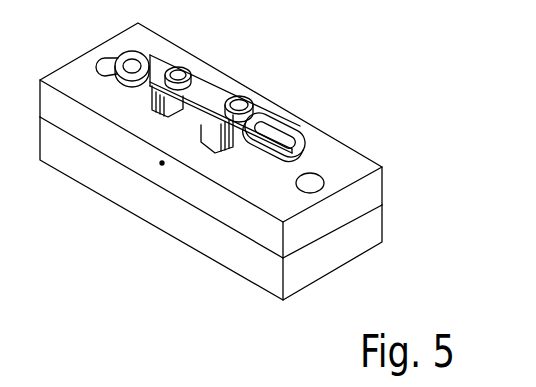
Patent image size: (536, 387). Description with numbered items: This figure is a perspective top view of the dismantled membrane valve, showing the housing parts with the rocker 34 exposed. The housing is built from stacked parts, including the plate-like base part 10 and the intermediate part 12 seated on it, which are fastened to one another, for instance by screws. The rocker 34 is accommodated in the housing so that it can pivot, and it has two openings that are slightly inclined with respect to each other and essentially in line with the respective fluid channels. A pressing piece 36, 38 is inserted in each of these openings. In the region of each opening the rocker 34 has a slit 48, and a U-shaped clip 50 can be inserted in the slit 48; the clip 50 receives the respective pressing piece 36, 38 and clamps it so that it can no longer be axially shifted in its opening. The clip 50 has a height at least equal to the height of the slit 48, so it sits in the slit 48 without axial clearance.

The base part 10 is at (367, 233).
The intermediate part 12 is at (358, 163).
The rocker 34 is at (193, 122).
The pressing piece 36 is at (186, 72).
The pressing piece 38 is at (236, 101).
The slit 48 is at (170, 100).
The clip 50 is at (295, 135).